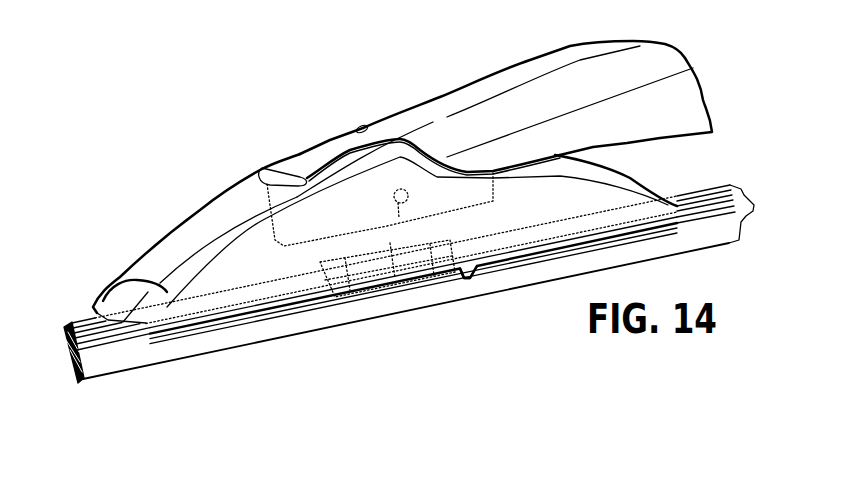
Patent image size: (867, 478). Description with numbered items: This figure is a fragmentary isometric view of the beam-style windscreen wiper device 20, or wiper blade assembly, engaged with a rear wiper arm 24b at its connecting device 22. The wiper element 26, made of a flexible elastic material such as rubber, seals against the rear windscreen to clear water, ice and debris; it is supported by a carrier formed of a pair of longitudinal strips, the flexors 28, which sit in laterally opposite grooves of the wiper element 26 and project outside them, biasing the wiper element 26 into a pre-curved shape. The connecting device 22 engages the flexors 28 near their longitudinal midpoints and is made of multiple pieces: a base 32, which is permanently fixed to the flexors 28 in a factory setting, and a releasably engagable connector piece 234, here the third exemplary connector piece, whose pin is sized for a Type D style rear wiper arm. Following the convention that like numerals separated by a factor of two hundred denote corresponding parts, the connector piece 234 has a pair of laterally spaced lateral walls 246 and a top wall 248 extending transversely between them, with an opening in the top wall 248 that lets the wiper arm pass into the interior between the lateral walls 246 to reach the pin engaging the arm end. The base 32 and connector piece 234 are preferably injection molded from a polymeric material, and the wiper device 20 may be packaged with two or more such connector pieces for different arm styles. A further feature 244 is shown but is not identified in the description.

The windscreen wiper device 20 is at (109, 241).
The connecting device 22 is at (232, 186).
The Type B rear wiper arm 24b is at (492, 82).
The wiper element 26 is at (160, 345).
The flexors 28 is at (757, 203).
The base 32 is at (377, 297).
The third exemplary connector piece 234 is at (113, 282).
The notch 244 is at (460, 272).
The lateral walls 246 is at (275, 262).
The top wall 248 is at (203, 213).